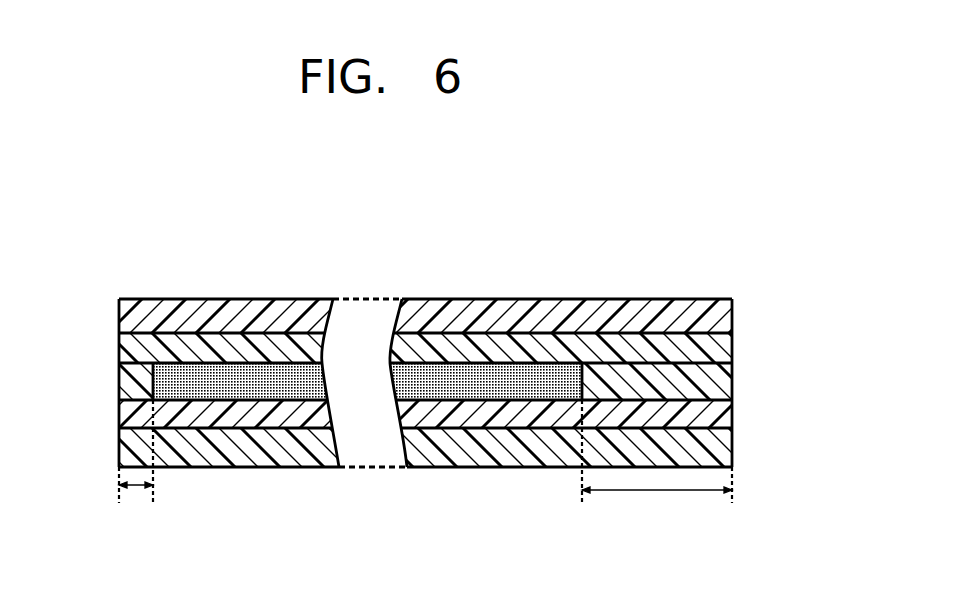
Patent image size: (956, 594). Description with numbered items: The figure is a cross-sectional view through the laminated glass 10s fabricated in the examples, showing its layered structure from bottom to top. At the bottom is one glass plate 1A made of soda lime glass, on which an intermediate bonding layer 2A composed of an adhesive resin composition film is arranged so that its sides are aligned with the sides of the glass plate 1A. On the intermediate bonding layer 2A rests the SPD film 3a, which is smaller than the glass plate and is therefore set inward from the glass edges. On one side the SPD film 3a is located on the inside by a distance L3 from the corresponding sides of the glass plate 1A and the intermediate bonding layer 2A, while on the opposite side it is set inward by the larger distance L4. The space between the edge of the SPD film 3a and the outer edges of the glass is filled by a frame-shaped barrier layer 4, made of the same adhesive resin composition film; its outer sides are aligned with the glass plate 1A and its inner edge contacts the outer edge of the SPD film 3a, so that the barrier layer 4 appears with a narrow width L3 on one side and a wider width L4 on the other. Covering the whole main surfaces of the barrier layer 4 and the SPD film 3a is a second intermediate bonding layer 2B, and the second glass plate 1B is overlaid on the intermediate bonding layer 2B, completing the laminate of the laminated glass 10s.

The laminated glass 10s is at (353, 261).
The glass plate 1A is at (720, 450).
The glass plate 1B is at (723, 318).
The intermediate bonding layer 2A is at (722, 417).
The intermediate bonding layer 2B is at (722, 342).
The SPD film 3a is at (507, 377).
The barrier layer 4 is at (723, 387).
The distance L3 is at (136, 466).
The distance L4 is at (657, 463).